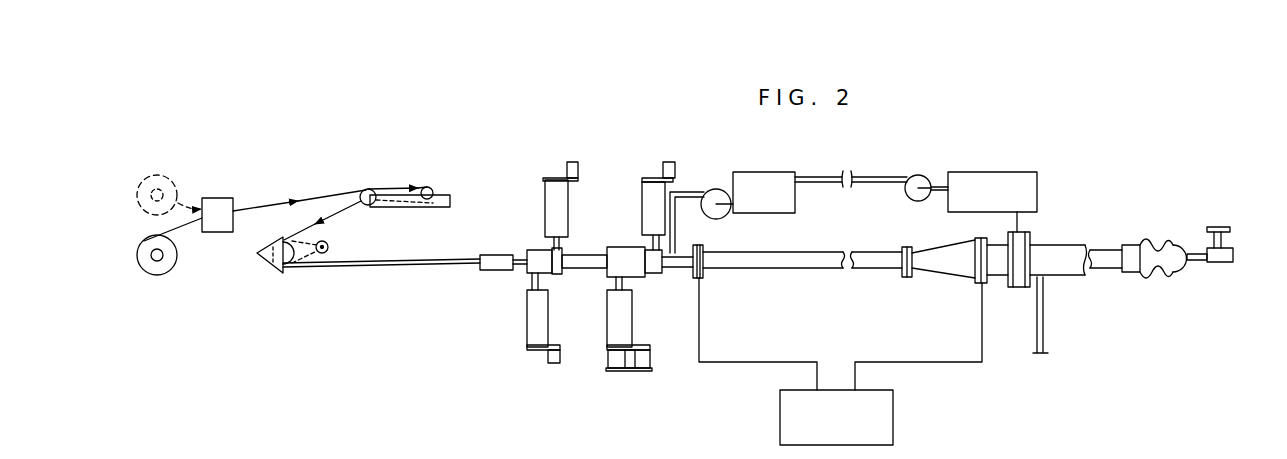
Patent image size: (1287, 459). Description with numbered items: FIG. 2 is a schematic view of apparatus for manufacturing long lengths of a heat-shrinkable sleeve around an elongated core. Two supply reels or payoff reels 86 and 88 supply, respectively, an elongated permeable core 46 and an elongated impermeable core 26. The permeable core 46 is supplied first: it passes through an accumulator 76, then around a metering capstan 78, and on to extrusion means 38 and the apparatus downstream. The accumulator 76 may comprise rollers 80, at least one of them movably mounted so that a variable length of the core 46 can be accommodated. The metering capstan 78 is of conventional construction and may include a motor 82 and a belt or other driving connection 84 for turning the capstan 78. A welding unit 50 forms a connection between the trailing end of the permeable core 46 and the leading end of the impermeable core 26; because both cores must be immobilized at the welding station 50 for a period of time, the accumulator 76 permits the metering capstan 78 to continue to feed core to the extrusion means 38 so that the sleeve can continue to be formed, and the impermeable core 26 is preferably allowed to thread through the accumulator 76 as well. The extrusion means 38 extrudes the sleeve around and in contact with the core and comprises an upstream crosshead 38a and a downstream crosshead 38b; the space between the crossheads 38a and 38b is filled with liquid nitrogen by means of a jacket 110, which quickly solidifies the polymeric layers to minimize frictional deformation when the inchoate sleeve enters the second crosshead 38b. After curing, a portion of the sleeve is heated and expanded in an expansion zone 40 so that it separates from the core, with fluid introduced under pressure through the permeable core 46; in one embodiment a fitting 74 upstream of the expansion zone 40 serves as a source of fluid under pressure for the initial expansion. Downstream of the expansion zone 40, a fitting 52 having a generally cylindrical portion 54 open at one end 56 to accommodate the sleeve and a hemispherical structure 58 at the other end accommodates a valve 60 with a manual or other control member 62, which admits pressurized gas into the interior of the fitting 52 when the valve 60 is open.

The impermeable core 26 is at (196, 197).
The extrusion means 38 is at (588, 247).
The upstream crosshead 38a is at (540, 250).
The downstream crosshead 38b is at (655, 274).
The expansion zone 40 is at (952, 276).
The permeable core 46 is at (178, 228).
The welding unit 50 is at (222, 198).
The fitting 52 is at (1139, 277).
The cylindrical portion 54 is at (1155, 273).
The open end 56 is at (1121, 246).
The hemispherical structure 58 is at (1177, 250).
The valve 60 is at (1222, 265).
The control member 62 is at (1218, 226).
The fitting 74 is at (490, 272).
The accumulator 76 is at (408, 209).
The metering capstan 78 is at (263, 262).
The rollers 80 is at (428, 188).
The motor 82 is at (329, 245).
The driving connection 84 is at (301, 231).
The supply reel 86 is at (143, 267).
The supply reel 88 is at (143, 180).
The jacket 110 is at (582, 266).